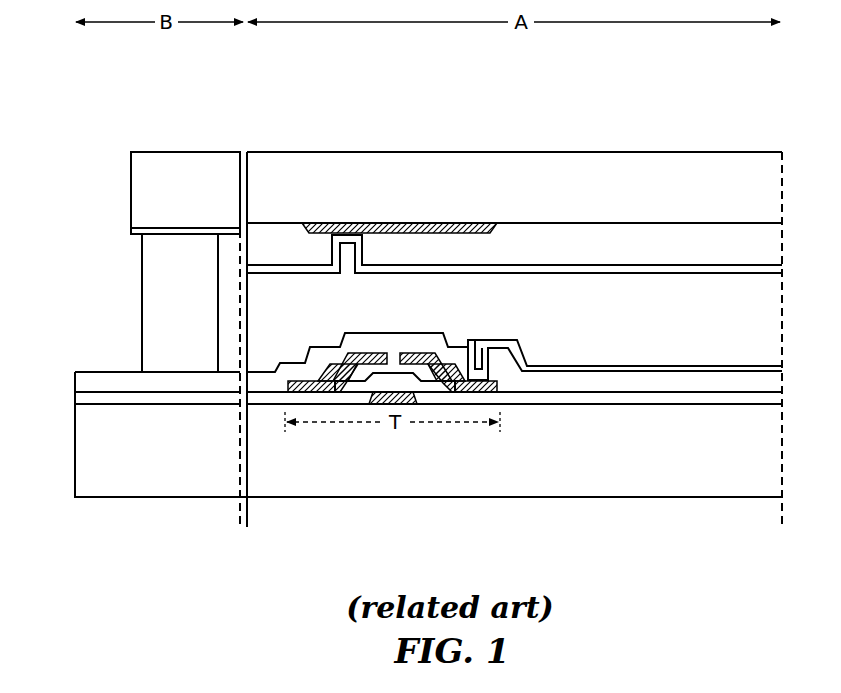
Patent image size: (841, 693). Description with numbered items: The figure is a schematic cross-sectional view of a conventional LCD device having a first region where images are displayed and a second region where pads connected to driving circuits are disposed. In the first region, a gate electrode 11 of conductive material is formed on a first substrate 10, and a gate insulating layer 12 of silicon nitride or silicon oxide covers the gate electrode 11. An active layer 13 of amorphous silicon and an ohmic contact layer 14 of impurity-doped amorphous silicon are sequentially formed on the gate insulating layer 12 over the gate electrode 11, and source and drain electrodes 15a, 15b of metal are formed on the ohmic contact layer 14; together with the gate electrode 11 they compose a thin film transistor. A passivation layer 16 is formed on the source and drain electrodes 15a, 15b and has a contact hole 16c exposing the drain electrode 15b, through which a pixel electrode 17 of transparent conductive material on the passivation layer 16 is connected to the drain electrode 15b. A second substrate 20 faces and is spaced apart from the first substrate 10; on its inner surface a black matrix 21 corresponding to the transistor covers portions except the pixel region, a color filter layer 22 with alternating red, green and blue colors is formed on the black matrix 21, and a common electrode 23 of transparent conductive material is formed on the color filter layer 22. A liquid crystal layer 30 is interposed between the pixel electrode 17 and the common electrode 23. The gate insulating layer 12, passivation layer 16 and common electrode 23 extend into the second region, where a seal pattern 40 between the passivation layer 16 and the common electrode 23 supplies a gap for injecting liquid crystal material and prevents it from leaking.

The first substrate 10 is at (195, 486).
The gate electrode 11 is at (371, 396).
The gate insulating layer 12 is at (180, 396).
The active layer 13 is at (392, 373).
The ohmic contact layer 14 is at (340, 366).
The source electrode 15a is at (365, 358).
The drain electrode 15b is at (424, 358).
The passivation layer 16 is at (130, 378).
The contact hole 16c is at (478, 338).
The pixel electrode 17 is at (560, 366).
The second substrate 20 is at (152, 157).
The black matrix 21 is at (367, 228).
The color filter layer 22 is at (538, 240).
The common electrode 23 is at (203, 230).
The liquid crystal layer 30 is at (760, 321).
The seal pattern 40 is at (152, 261).